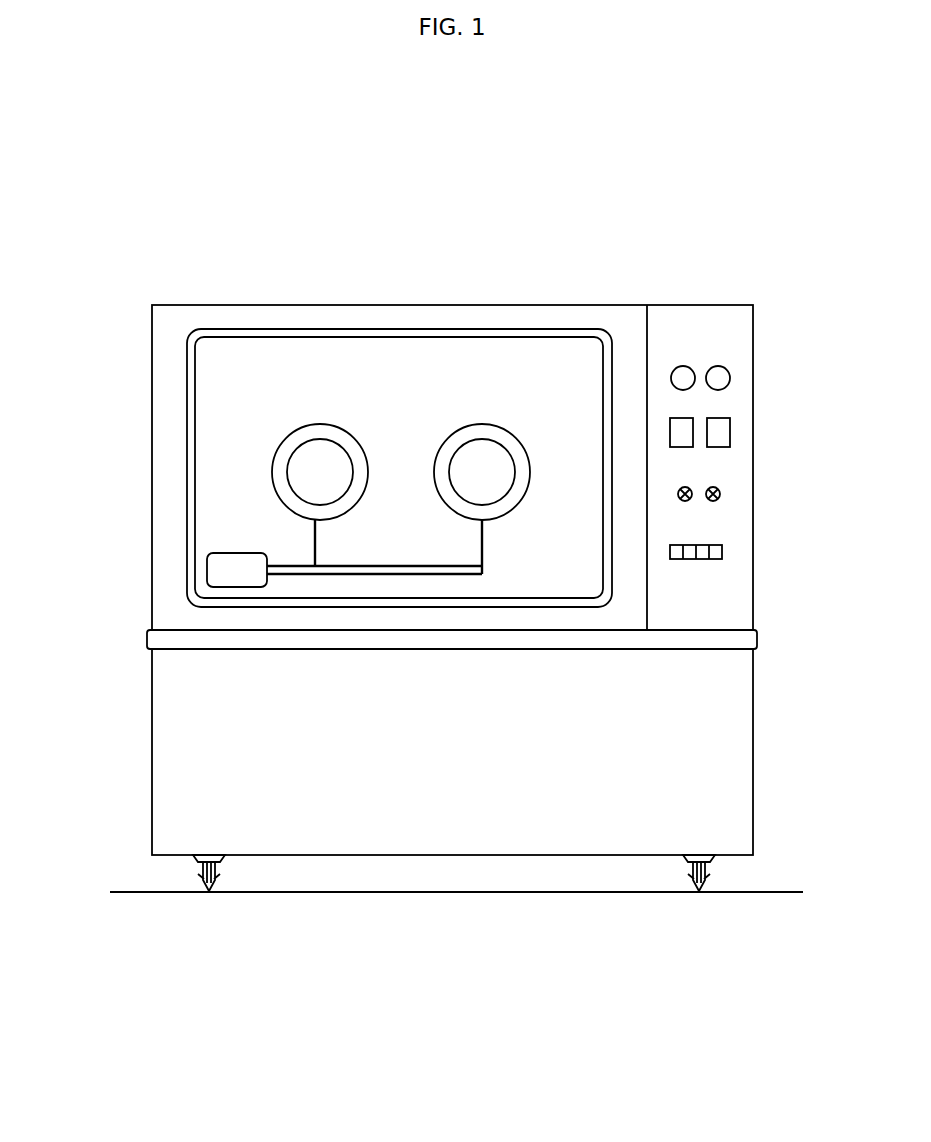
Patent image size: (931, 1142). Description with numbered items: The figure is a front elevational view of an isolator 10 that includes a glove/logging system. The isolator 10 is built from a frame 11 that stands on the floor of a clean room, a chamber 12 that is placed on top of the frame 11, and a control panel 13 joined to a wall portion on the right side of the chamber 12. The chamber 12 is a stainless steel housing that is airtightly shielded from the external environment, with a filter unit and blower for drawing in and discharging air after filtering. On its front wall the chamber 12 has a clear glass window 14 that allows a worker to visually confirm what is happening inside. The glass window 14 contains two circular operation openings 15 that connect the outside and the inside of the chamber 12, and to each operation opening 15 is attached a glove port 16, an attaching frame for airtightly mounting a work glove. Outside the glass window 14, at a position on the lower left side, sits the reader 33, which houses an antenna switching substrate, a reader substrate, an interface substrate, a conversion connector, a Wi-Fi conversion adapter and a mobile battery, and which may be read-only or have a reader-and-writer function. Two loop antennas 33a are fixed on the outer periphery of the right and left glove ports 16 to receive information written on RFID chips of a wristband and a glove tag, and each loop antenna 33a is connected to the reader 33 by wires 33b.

The isolator 10 is at (700, 263).
The frame 11 is at (723, 733).
The chamber 12 is at (127, 385).
The control panel 13 is at (738, 397).
The glass window 14 is at (307, 347).
The operation openings 15 is at (327, 453).
The glove port 16 is at (462, 507).
The reader 33 is at (232, 572).
The loop antennas 33a is at (293, 427).
The wires 33b is at (317, 545).